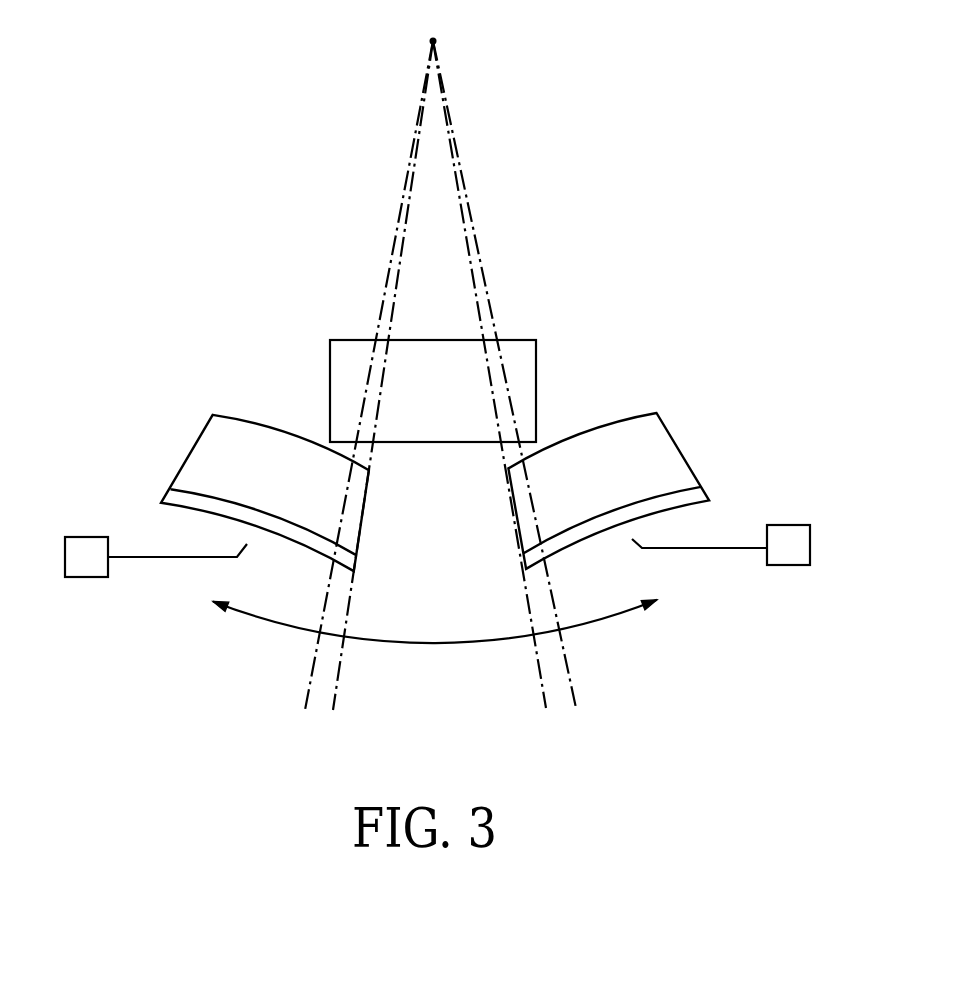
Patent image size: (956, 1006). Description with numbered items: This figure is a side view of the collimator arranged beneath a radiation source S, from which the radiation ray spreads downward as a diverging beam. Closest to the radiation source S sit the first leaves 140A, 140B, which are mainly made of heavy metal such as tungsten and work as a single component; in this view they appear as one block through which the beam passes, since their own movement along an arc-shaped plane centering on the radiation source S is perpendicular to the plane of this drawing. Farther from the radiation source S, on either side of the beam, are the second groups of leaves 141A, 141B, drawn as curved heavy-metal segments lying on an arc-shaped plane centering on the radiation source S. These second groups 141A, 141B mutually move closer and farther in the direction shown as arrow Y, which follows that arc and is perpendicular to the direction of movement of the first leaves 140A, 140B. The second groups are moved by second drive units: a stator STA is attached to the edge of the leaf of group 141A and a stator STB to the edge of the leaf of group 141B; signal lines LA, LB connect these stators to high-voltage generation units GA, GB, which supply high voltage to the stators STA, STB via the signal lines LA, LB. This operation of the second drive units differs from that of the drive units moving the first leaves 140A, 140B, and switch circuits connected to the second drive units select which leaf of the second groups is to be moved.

The radiation source S is at (435, 42).
The first leaves 140A is at (496, 353).
The first leaves 140B is at (530, 340).
The second group of leaves 141A is at (203, 464).
The second group of leaves 141B is at (662, 452).
The stator STA is at (177, 515).
The stator STB is at (697, 513).
The signal line LA is at (160, 557).
The signal line LB is at (687, 549).
The high-voltage generation unit GA is at (92, 577).
The high-voltage generation unit GB is at (772, 565).
The arrow Y is at (597, 618).